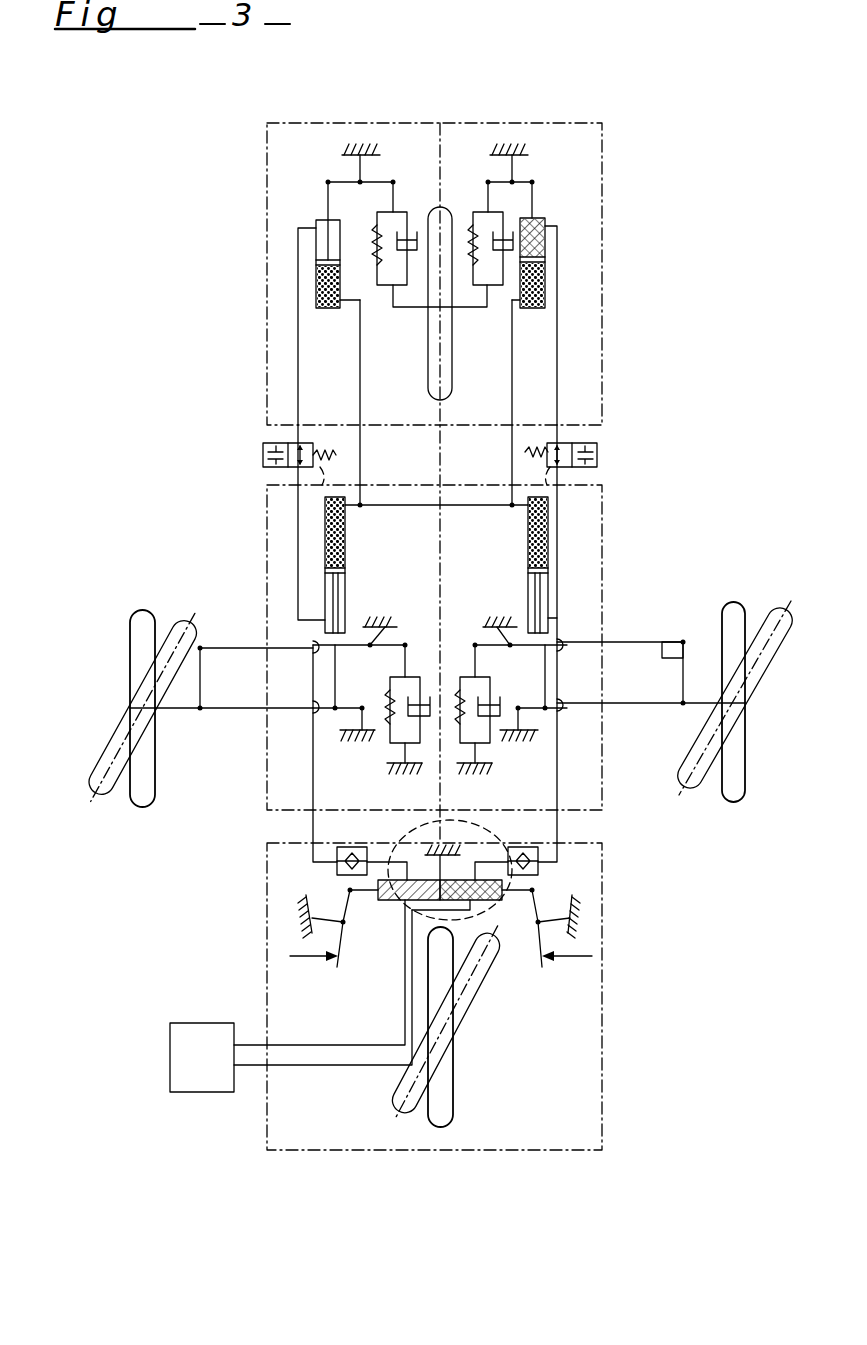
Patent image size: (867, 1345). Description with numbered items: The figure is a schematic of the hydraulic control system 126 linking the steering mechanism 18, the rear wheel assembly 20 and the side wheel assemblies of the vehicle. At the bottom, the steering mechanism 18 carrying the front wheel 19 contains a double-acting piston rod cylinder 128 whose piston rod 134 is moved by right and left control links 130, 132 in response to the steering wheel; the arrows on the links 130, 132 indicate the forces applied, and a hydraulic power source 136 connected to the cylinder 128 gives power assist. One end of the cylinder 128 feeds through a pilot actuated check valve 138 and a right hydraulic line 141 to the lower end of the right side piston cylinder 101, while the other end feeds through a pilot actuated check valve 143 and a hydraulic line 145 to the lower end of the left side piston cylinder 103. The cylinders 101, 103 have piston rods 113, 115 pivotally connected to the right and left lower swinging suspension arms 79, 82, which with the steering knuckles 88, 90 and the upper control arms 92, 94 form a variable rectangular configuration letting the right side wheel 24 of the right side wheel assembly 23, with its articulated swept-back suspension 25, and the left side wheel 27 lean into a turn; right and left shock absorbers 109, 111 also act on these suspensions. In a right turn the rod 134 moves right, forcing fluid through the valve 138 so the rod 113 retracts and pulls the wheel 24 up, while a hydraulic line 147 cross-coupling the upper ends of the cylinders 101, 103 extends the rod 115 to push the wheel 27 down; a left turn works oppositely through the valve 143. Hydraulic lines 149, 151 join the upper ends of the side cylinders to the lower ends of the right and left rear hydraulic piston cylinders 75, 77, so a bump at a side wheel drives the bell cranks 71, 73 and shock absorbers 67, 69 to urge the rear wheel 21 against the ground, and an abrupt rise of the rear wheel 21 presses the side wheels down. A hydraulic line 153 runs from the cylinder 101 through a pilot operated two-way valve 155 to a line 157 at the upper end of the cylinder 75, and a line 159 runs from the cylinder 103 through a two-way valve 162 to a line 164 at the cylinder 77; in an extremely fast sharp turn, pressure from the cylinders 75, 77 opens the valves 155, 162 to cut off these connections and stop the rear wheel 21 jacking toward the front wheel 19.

The steering mechanism 18 is at (603, 1010).
The front wheel 19 is at (477, 1010).
The rear wheel assembly 20 is at (267, 380).
The rear wheel 21 is at (428, 343).
The right side wheel assembly 23 is at (267, 790).
The right side wheel 24 is at (142, 807).
The right side articulated swinging-link swept-back suspension 25 is at (602, 800).
The left side wheel 27 is at (738, 760).
The right rear shock absorber 67 is at (406, 206).
The left rear shock absorber 69 is at (465, 207).
The right bell crank 71 is at (375, 186).
The left bell crank 73 is at (525, 192).
The right rear hydraulic piston cylinder 75 is at (322, 220).
The left rear hydraulic piston cylinder 77 is at (540, 220).
The right lower swinging suspension arm 79 is at (237, 708).
The left lower swinging suspension arm 82 is at (620, 703).
The right steering knuckle 88 is at (200, 690).
The left steering knuckle 90 is at (683, 681).
The right upper control arm 92 is at (222, 648).
The left upper suspension arm 94 is at (630, 642).
The right side piston cylinder 101 is at (325, 548).
The left side piston cylinder 103 is at (548, 541).
The right side shock absorber 109 is at (421, 662).
The left side shock absorber 111 is at (462, 662).
The right piston rod 113 is at (343, 700).
The left piston rod 115 is at (545, 680).
The hydraulic control system 126 is at (224, 942).
The double-acting piston rod cylinder 128 is at (487, 894).
The right control link 130 is at (343, 946).
The left control link 132 is at (540, 960).
The piston rod 134 is at (395, 894).
The hydraulic power source 136 is at (170, 1048).
The pilot actuated check valve 138 is at (337, 866).
The right hydraulic line 141 is at (313, 780).
The pilot actuated check valve 143 is at (538, 866).
The hydraulic line 145 is at (557, 771).
The hydraulic line 147 is at (405, 505).
The hydraulic line 149 is at (360, 349).
The hydraulic line 151 is at (512, 351).
The hydraulic line 153 is at (298, 537).
The pilot operated two-way valve 155 is at (263, 452).
The hydraulic line 157 is at (298, 293).
The hydraulic line 159 is at (557, 586).
The pilot operated two-way valve 162 is at (597, 456).
The hydraulic line 164 is at (557, 344).